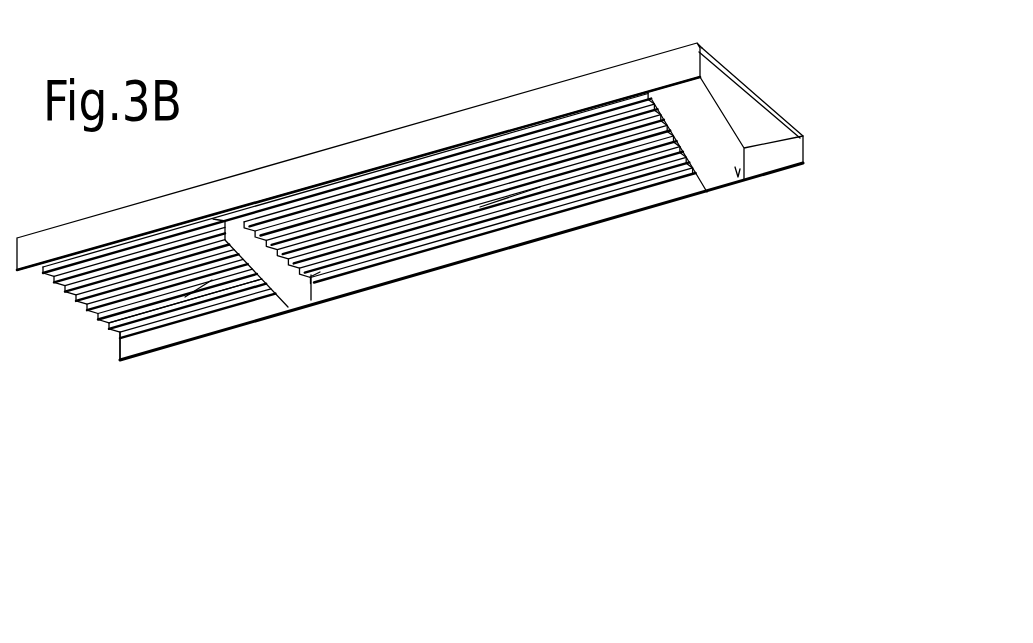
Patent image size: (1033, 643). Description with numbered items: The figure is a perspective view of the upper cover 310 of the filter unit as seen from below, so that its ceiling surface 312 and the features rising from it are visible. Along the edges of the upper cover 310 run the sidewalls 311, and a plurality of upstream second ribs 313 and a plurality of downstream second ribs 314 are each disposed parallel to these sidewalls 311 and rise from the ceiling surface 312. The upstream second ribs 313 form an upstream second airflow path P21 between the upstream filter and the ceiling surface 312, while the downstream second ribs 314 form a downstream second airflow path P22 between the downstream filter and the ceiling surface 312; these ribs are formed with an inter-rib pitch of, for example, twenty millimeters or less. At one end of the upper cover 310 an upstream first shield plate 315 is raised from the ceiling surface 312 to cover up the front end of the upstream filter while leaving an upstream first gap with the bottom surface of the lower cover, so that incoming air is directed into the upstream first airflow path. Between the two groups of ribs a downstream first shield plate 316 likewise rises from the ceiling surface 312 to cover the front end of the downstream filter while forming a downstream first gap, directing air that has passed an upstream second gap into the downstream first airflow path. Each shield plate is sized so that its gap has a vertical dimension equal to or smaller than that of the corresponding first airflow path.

The upper cover 310 is at (147, 508).
The sidewalls 311 is at (337, 158).
The ceiling surface 312 is at (743, 107).
The upstream second ribs 313 is at (473, 197).
The downstream second ribs 314 is at (170, 283).
The upstream first shield plate 315 is at (705, 137).
The downstream first shield plate 316 is at (275, 262).
The upstream second airflow path P21 is at (540, 187).
The downstream second airflow path P22 is at (212, 280).